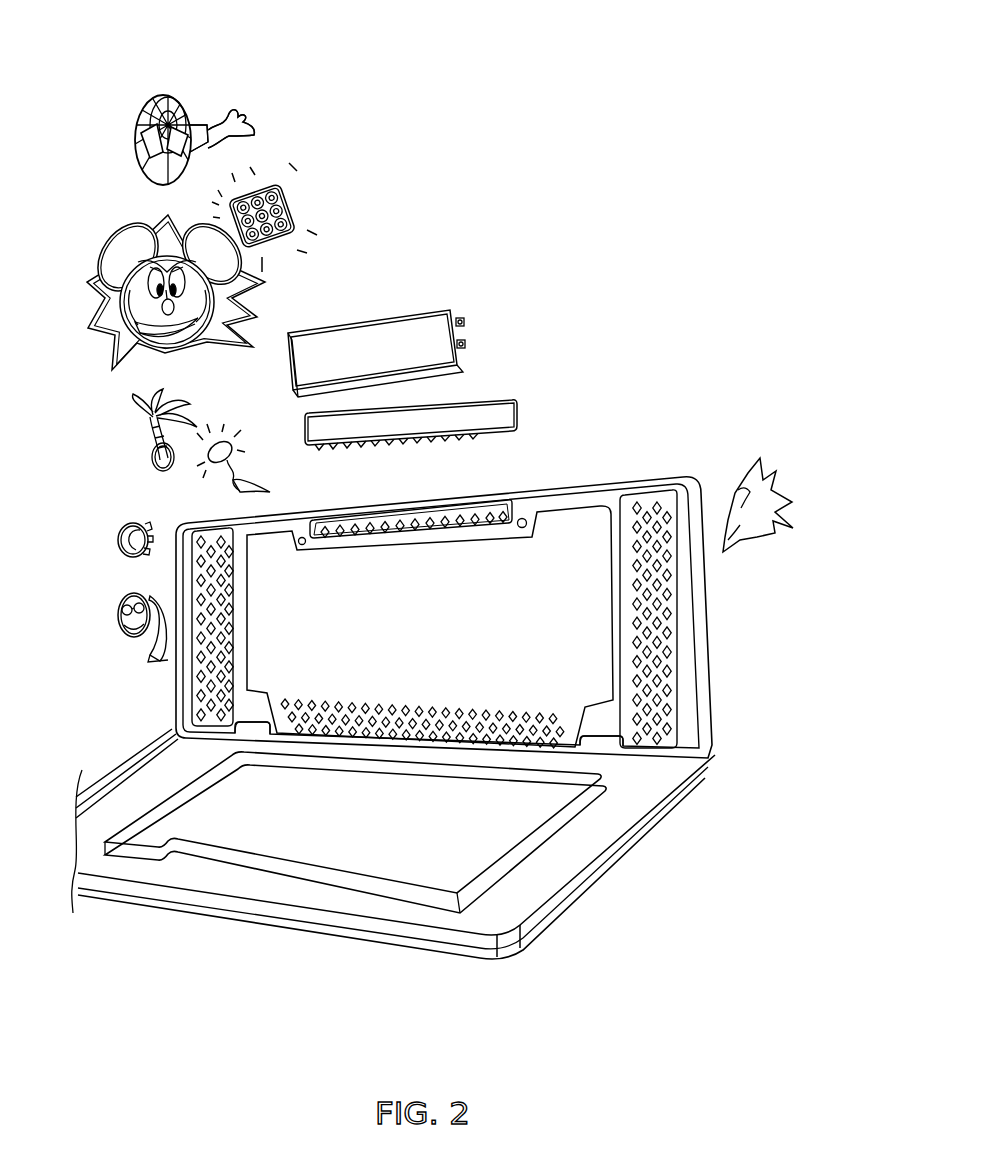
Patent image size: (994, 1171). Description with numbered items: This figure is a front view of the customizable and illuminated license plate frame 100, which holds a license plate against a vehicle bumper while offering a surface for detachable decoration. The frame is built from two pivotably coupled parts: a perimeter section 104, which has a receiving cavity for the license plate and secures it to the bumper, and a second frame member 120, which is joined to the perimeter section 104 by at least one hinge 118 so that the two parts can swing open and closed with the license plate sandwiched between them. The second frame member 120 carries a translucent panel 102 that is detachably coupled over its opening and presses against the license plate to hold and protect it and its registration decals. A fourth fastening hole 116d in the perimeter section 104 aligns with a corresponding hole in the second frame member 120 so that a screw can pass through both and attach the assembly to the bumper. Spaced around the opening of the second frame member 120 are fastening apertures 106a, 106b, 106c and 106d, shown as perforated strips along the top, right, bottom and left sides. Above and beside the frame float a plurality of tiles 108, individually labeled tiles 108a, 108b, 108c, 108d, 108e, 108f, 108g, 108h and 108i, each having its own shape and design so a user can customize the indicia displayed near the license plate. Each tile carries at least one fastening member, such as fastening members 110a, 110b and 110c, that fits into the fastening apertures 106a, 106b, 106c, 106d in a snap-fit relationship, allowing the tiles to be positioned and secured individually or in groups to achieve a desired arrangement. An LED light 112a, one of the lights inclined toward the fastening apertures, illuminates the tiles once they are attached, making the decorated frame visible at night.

The customizable and illuminated license plate frame 100 is at (724, 130).
The translucent panel 102 is at (380, 830).
The perimeter section 104 is at (572, 882).
The fastening aperture 106a is at (342, 530).
The fastening aperture 106b is at (676, 600).
The fastening aperture 106c is at (700, 759).
The fastening aperture 106d is at (195, 697).
The tile 108 is at (118, 624).
The tile 108a is at (156, 140).
The tile 108b is at (156, 291).
The tile 108c is at (138, 430).
The tile 108d is at (105, 540).
The tile 108e is at (281, 217).
The tile 108f is at (376, 338).
The tile 108g is at (437, 418).
The tile 108h is at (775, 504).
The tile 108i is at (250, 452).
The fastening member 110a is at (205, 127).
The fastening member 110b is at (483, 442).
The fastening member 110c is at (131, 523).
The LED light 112a is at (235, 108).
The fourth fastening hole 116d is at (527, 519).
The hinge 118 is at (250, 728).
The second frame member 120 is at (698, 698).